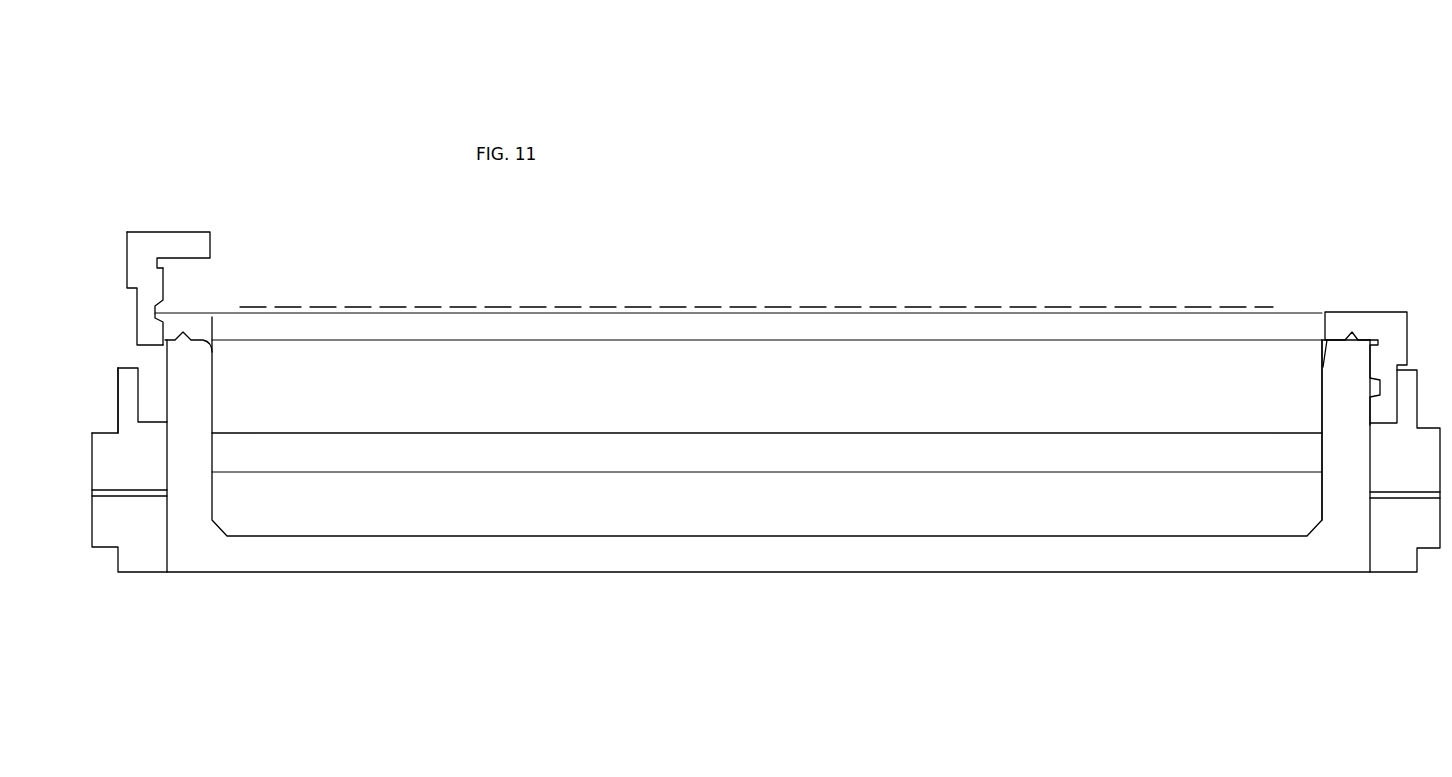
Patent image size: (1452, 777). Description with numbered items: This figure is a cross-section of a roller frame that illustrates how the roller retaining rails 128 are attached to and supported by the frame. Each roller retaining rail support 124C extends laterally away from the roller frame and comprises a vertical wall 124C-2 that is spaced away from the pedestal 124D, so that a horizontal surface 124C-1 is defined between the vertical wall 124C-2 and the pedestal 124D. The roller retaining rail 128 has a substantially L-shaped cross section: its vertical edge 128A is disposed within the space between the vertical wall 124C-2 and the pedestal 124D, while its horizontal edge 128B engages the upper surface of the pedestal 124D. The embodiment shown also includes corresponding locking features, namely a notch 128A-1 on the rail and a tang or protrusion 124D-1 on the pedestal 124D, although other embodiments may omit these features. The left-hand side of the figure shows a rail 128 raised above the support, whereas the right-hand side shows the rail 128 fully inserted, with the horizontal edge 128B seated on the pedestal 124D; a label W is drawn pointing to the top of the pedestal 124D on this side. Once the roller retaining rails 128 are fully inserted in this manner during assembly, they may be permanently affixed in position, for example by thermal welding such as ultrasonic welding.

The roller retaining rail support 124C is at (766, 473).
The horizontal surface 124C-1 is at (153, 412).
The vertical wall 124C-2 is at (130, 413).
The pedestal 124D is at (1215, 360).
The tang or protrusion 124D-1 is at (1363, 379).
The roller retaining rail 128 is at (767, 268).
The vertical edge 128A is at (203, 357).
The notch 128A-1 is at (168, 328).
The horizontal edge 128B is at (190, 258).
The window W is at (1325, 335).